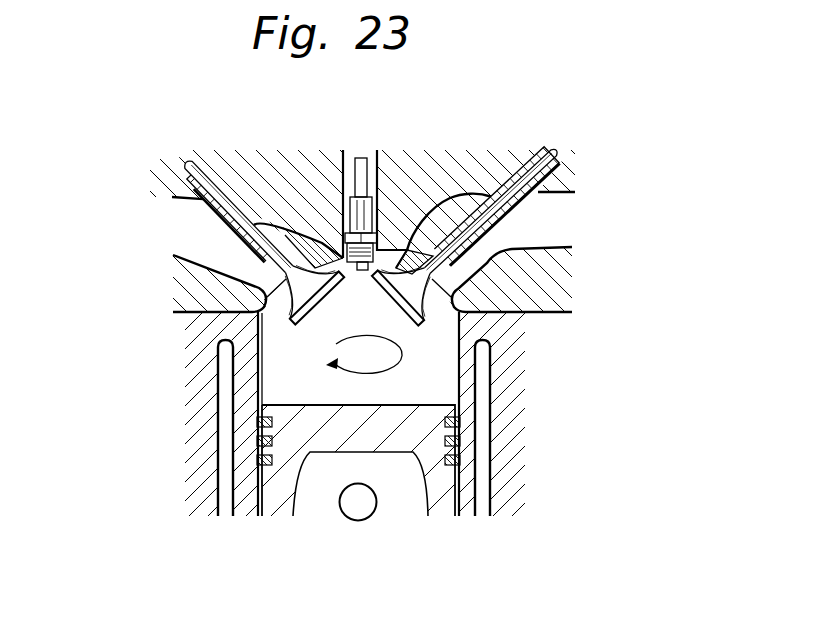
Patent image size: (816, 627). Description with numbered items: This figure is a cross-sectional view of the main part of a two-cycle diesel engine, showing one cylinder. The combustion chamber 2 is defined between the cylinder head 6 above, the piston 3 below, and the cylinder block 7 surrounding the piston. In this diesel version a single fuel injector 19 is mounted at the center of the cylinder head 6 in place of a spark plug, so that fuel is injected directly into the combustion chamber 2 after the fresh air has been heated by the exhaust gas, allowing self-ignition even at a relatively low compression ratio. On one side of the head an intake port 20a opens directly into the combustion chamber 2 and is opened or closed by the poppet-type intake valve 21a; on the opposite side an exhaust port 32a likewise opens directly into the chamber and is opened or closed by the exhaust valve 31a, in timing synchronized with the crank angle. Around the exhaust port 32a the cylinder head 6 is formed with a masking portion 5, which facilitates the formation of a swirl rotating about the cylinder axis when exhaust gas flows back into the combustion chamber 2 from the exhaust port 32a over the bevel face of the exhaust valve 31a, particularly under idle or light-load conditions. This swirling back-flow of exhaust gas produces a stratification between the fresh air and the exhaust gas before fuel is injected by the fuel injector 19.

The combustion chamber 2 is at (427, 382).
The piston 3 is at (436, 482).
The masking portion 5 is at (284, 292).
The cylinder head 6 is at (490, 167).
The cylinder block 7 is at (503, 420).
The fuel injector 19 is at (355, 212).
The intake port 20a is at (631, 234).
The intake valve 21a is at (408, 268).
The exhaust valve 31a is at (256, 217).
The exhaust port 32a is at (200, 233).